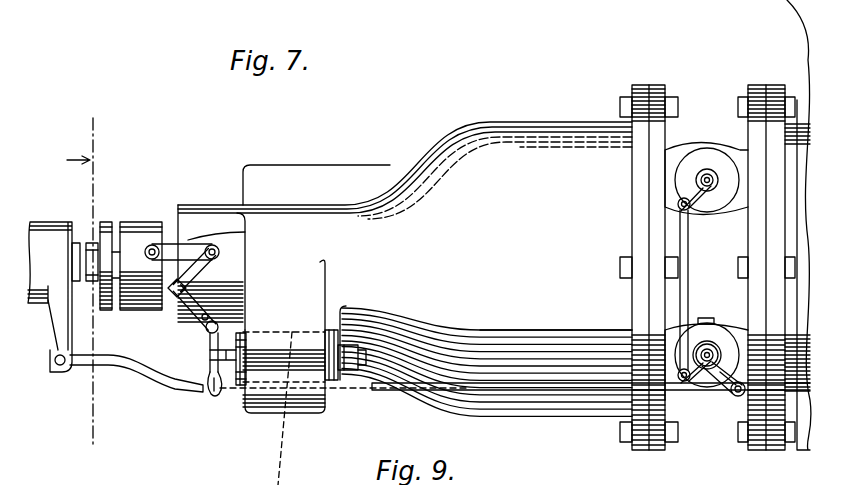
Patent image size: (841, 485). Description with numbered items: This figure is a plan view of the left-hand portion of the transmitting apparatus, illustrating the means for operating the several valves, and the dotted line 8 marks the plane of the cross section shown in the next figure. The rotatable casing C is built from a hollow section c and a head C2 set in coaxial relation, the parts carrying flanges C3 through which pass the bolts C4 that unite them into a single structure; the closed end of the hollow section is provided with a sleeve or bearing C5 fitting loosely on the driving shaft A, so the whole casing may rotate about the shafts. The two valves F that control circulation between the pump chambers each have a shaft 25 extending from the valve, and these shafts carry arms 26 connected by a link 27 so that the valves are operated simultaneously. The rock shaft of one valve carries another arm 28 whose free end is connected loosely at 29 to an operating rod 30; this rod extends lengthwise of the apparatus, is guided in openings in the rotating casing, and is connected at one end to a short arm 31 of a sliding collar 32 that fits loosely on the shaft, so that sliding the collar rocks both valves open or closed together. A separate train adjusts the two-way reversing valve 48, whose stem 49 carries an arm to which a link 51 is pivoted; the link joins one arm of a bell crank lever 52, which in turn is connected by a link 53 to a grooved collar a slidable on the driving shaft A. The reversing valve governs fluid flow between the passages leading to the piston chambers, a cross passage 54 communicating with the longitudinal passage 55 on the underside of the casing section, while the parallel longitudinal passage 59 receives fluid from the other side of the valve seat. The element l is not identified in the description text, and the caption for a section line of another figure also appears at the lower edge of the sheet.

The section line 8— 8 is at (84, 283).
The sliding collar 32 is at (44, 233).
The short arm 31 is at (60, 340).
The driving shaft A is at (78, 243).
The cross passage 54 is at (132, 233).
The grooved collar a is at (148, 219).
The sleeve or bearing C5 is at (194, 212).
The longitudinal passage 59 is at (316, 185).
The link 53 is at (196, 258).
The bell crank lever 52 is at (176, 300).
The valve stem 49 is at (228, 352).
The link 51 is at (212, 374).
The two-way reversing valve 48 is at (237, 388).
The longitudinal passage 55 is at (368, 360).
The operating rod 30 is at (395, 392).
The flanges C3 is at (755, 452).
The bolts C4 is at (623, 430).
The casing C is at (671, 225).
The hollow section c is at (556, 293).
The head C2 is at (706, 272).
The shaft 25 is at (633, 413).
The lower disc l is at (700, 320).
The arms 26 is at (690, 377).
The valves F is at (698, 343).
The link 27 is at (682, 234).
The arm 28 is at (717, 378).
The loose connection 29 is at (732, 390).